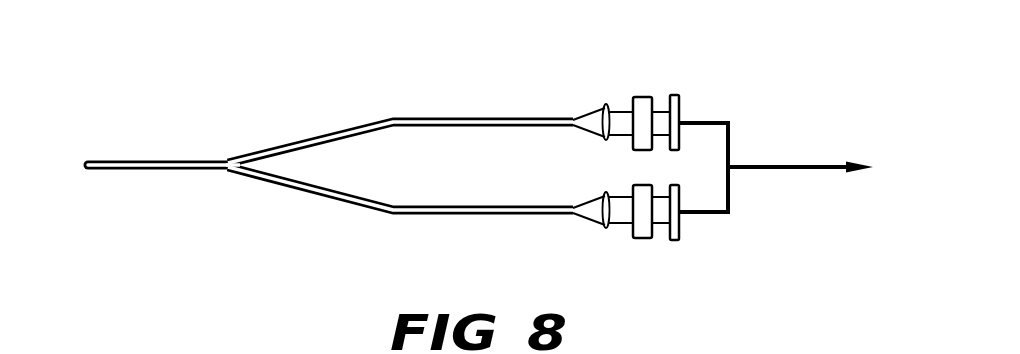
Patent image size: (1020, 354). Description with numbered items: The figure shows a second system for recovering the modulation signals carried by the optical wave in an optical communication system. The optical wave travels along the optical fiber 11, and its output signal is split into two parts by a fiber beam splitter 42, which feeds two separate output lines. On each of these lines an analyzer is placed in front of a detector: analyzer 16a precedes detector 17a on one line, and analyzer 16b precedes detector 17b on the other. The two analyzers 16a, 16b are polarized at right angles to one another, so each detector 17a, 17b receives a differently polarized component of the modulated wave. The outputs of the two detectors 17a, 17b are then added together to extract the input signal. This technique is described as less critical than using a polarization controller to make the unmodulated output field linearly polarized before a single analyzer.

The optical fiber 11 is at (163, 172).
The fiber beam splitter 42 is at (237, 171).
The analyzer 16a is at (637, 103).
The analyzer 16b is at (637, 236).
The detector 17a is at (676, 98).
The detector 17b is at (676, 238).